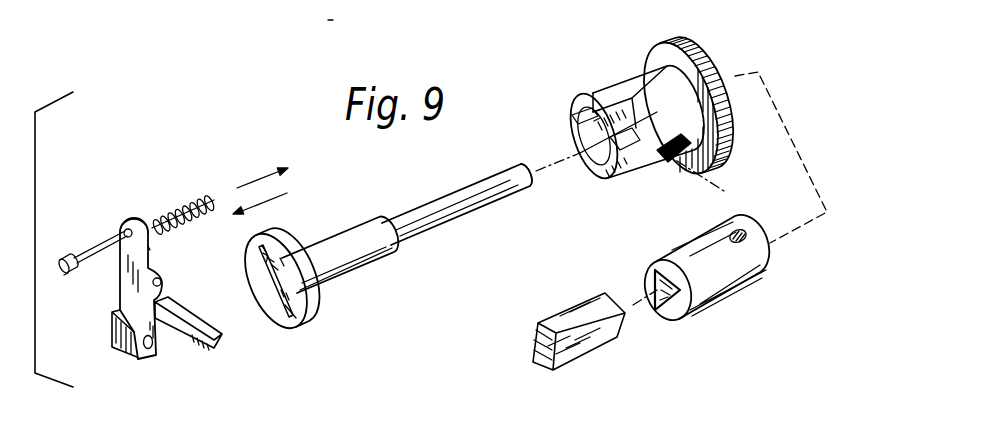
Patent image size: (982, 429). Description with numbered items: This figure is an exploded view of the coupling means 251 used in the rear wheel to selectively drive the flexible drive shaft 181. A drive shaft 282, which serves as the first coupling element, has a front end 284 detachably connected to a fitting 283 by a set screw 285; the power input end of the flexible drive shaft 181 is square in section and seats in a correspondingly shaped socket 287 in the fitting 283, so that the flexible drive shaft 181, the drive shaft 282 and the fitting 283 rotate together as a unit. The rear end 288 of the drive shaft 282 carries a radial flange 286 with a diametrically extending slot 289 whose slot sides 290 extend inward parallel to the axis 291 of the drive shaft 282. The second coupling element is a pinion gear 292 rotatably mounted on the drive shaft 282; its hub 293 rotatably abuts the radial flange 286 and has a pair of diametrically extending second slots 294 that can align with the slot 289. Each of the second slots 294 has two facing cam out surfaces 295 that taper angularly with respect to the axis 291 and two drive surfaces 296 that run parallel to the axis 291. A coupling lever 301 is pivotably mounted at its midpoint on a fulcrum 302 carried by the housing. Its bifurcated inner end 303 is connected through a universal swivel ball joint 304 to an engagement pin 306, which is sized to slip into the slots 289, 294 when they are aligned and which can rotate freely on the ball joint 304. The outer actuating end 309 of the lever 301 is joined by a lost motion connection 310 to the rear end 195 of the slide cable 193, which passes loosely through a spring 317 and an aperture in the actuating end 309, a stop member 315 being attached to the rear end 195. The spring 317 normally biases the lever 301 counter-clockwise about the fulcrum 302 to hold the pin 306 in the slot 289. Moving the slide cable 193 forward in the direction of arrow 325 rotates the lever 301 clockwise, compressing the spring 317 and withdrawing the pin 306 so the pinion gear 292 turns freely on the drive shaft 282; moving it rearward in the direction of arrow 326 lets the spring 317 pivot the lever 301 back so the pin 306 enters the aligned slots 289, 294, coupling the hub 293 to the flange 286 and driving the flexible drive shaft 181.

The flexible drive shaft 181 is at (610, 337).
The slide cable 193 is at (97, 243).
The rear end of slide cable 195 is at (83, 243).
The coupling means 251 is at (205, 195).
The drive shaft 282 is at (411, 207).
The fitting 283 is at (732, 297).
The front end of drive shaft 284 is at (500, 172).
The set screw 285 is at (746, 243).
The radial flange 286 is at (280, 237).
The socket 287 is at (663, 323).
The rear end of drive shaft 288 is at (363, 247).
The slot 289 is at (292, 300).
The slot sides 290 is at (248, 297).
The axis 291 is at (553, 163).
The pinion gear 292 is at (684, 57).
The hub 293 is at (622, 82).
The second slots 294 is at (576, 117).
The cam out surfaces 295 is at (593, 93).
The drive surfaces 296 is at (575, 119).
The coupling lever 301 is at (146, 248).
The fulcrum 302 is at (162, 280).
The inner end of lever 303 is at (112, 323).
The universal swivel ball joint 304 is at (136, 357).
The engagement pin 306 is at (208, 349).
The outer actuating end 309 is at (126, 219).
The lost motion connection 310 is at (140, 219).
The stop member 315 is at (77, 274).
The spring 317 is at (163, 212).
The arrow 325 is at (289, 153).
The arrow 326 is at (298, 179).